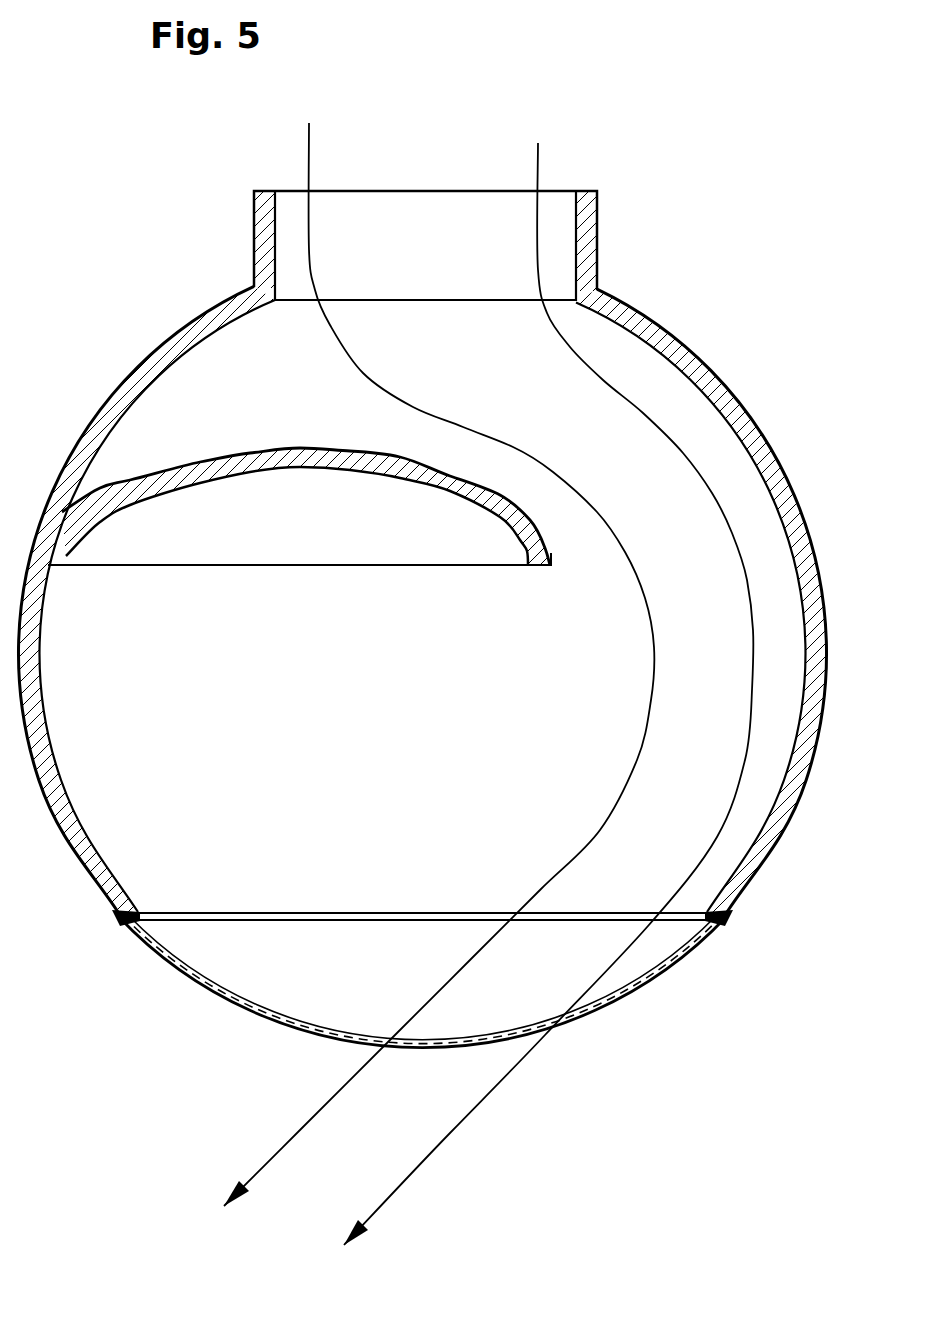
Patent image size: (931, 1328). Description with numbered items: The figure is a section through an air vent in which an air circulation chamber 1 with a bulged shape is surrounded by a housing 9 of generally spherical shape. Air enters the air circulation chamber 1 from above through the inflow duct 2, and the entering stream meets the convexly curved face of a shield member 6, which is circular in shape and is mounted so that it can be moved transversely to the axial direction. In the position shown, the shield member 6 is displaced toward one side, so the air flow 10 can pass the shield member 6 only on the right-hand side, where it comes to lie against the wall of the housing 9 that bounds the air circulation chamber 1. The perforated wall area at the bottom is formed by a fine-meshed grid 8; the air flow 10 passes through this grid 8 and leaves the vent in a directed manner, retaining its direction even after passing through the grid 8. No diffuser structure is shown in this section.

The air circulation chamber 1 is at (422, 690).
The inflow duct 2 is at (414, 212).
The shield member 6 is at (288, 452).
The fine-meshed grid 8 is at (612, 1000).
The housing 9 is at (781, 479).
The air flow 10 is at (650, 673).